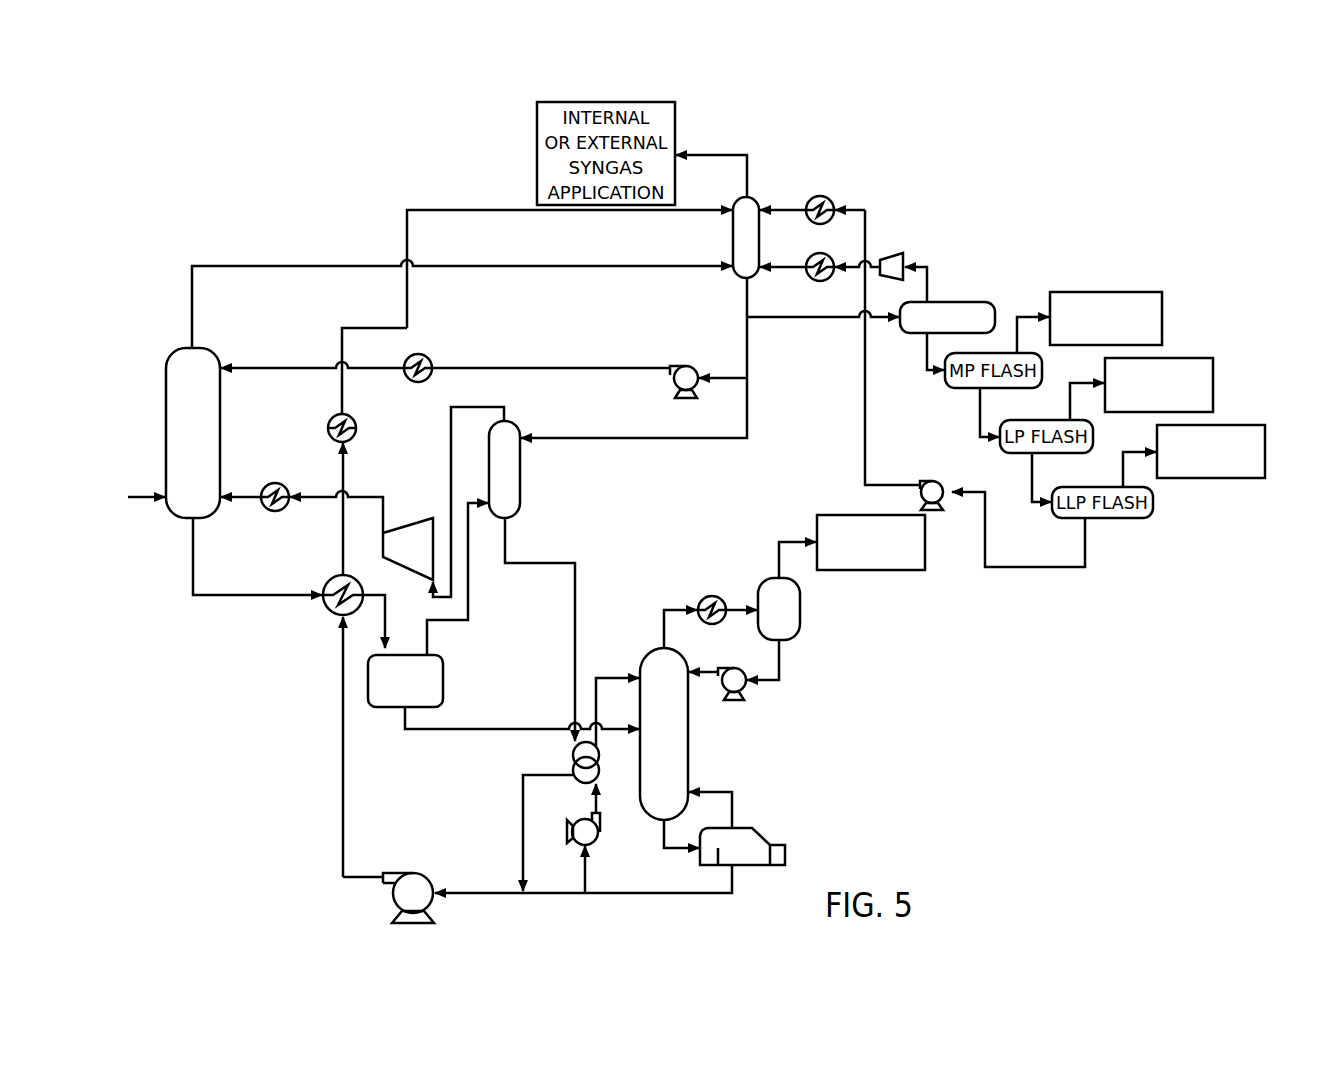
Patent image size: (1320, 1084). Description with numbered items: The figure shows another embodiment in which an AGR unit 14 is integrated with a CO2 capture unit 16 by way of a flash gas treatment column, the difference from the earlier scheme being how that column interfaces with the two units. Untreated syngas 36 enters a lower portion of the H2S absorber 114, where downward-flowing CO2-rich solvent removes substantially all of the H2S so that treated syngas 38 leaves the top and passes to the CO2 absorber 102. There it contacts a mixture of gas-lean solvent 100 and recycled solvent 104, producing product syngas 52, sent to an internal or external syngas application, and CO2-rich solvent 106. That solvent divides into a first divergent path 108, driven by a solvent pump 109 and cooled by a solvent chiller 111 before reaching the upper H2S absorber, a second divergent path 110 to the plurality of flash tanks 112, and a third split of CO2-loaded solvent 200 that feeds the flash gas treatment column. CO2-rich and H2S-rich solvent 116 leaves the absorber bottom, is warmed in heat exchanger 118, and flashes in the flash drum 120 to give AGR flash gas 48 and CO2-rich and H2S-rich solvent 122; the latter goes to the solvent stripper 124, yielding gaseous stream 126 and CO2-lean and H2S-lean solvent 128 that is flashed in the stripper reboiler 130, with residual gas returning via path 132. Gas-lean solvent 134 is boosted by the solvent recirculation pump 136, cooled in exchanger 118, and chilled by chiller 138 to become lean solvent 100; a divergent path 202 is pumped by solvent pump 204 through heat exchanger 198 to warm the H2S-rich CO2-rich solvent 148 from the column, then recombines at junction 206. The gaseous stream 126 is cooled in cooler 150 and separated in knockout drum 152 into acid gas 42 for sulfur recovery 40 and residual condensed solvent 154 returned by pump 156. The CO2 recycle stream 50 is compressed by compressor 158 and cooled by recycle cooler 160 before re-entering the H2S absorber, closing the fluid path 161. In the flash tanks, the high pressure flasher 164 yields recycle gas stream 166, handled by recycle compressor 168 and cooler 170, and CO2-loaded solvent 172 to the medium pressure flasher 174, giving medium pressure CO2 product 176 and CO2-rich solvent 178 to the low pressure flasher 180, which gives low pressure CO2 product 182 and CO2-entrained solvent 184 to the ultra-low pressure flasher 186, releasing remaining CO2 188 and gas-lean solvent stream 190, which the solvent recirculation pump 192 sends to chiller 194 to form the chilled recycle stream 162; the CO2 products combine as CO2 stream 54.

The AGR unit 14 is at (372, 150).
The CO2 capture unit 16 is at (1030, 200).
The untreated syngas 36 is at (133, 496).
The treated syngas 38 is at (308, 265).
The sulfur recovery 40 is at (848, 515).
The acid gas 42 is at (780, 540).
The AGR flash gas 48 is at (455, 622).
The CO2 recycle stream 50 is at (486, 406).
The product syngas 52 is at (710, 155).
The CO2 stream 54 is at (1215, 302).
The gas-lean solvent 100 is at (409, 303).
The CO2 absorber 102 is at (742, 280).
The recycled solvent 104 is at (868, 450).
The CO2-rich solvent 106 is at (747, 305).
The first divergent path 108 is at (765, 376).
The solvent pump 109 is at (697, 367).
The second divergent path 110 is at (814, 319).
The solvent chiller 111 is at (428, 358).
The plurality of flash tanks 112 is at (1178, 535).
The H2S absorber 114 is at (211, 348).
The CO2-rich and H2S-rich solvent 116 is at (195, 565).
The heat exchanger 118 is at (330, 580).
The flash drum 120 is at (445, 697).
The CO2-rich and H2S-rich solvent 122 is at (498, 729).
The solvent stripper 124 is at (691, 742).
The gaseous stream 126 is at (664, 620).
The CO2-lean and H2S-lean solvent 128 is at (688, 853).
The stripper reboiler 130 is at (785, 846).
The path 132 is at (740, 792).
The gas-lean solvent 134 is at (700, 897).
The solvent recirculation pump 136 is at (418, 872).
The chiller 138 is at (355, 420).
The H2S-rich CO2-rich solvent 148 is at (507, 548).
The cooler 150 is at (720, 599).
The knockout drum 152 is at (801, 612).
The residual condensed solvent 154 is at (781, 668).
The pump 156 is at (740, 669).
The compressor 158 is at (411, 571).
The recycle cooler 160 is at (284, 484).
The fluid path 161 is at (250, 600).
The chilled recycle stream 162 is at (812, 197).
The high pressure flasher 164 is at (968, 303).
The recycle gas stream 166 is at (930, 280).
The recycle compressor 168 is at (908, 254).
The cooler 170 is at (822, 282).
The CO2-loaded solvent 172 is at (927, 350).
The medium pressure flasher 174 is at (1043, 372).
The medium pressure CO2 product 176 is at (1120, 292).
The CO2-rich solvent 178 is at (980, 405).
The low pressure flasher 180 is at (1094, 440).
The low pressure CO2 product 182 is at (1190, 358).
The CO2-entrained solvent 184 is at (1032, 468).
The ultra-low pressure flasher 186 is at (1155, 503).
The remaining CO2 188 is at (1222, 427).
The gas-lean solvent stream 190 is at (1032, 569).
The solvent recirculation pump 192 is at (935, 481).
The chiller 194 is at (851, 205).
The heat exchanger 198 is at (573, 762).
The CO2-loaded solvent 200 is at (630, 438).
The divergent path 202 is at (587, 862).
The solvent pump 204 is at (601, 833).
The junction 206 is at (523, 897).